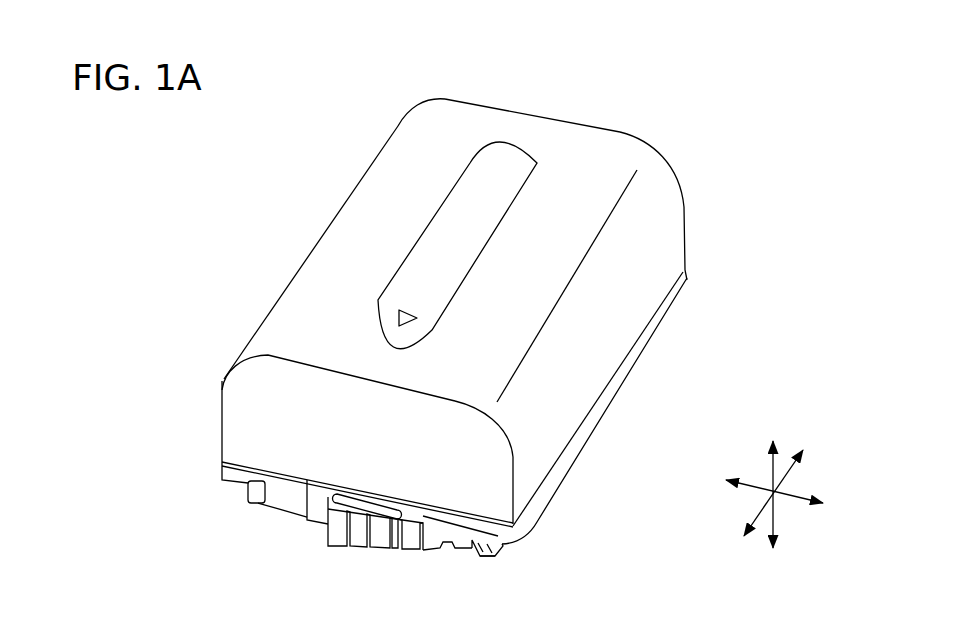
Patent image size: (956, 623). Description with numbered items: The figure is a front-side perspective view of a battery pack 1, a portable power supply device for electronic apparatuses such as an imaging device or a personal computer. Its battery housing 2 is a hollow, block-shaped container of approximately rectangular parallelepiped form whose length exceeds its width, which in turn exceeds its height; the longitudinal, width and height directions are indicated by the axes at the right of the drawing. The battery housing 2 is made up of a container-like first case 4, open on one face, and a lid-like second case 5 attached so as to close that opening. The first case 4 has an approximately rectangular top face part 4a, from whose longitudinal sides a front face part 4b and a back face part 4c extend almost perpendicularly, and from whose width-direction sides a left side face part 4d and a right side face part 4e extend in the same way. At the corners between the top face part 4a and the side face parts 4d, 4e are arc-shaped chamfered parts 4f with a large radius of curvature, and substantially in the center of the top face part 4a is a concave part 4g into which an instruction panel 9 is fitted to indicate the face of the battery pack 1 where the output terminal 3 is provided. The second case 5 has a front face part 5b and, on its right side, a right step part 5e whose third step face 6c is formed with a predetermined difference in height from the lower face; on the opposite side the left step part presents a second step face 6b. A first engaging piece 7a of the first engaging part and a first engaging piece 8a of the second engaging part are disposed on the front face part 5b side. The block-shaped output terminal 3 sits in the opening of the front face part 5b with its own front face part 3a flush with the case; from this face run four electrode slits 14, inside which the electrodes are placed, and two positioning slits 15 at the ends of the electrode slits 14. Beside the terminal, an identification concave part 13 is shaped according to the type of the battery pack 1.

The battery pack 1 is at (326, 123).
The battery housing 2 is at (129, 408).
The output terminal 3 is at (346, 548).
The front face part 3a is at (312, 500).
The first case 4 is at (247, 433).
The top face part 4a is at (611, 157).
The front face part 4b is at (255, 398).
The back face part 4c is at (483, 98).
The left side face part 4d is at (303, 253).
The right side face part 4e is at (663, 228).
The chamfered parts 4f is at (432, 98).
The concave part 4g is at (424, 226).
The second case 5 is at (219, 468).
The front face part 5b is at (260, 506).
The right step part 5e is at (670, 303).
The second step face 6b is at (248, 484).
The third step face 6c is at (495, 554).
The first engaging piece 7a is at (280, 508).
The first engaging piece 8a is at (481, 559).
The instruction panel 9 is at (510, 158).
The identification concave part 13 is at (449, 549).
The electrode slits 14 is at (378, 540).
The positioning slits 15 is at (336, 502).